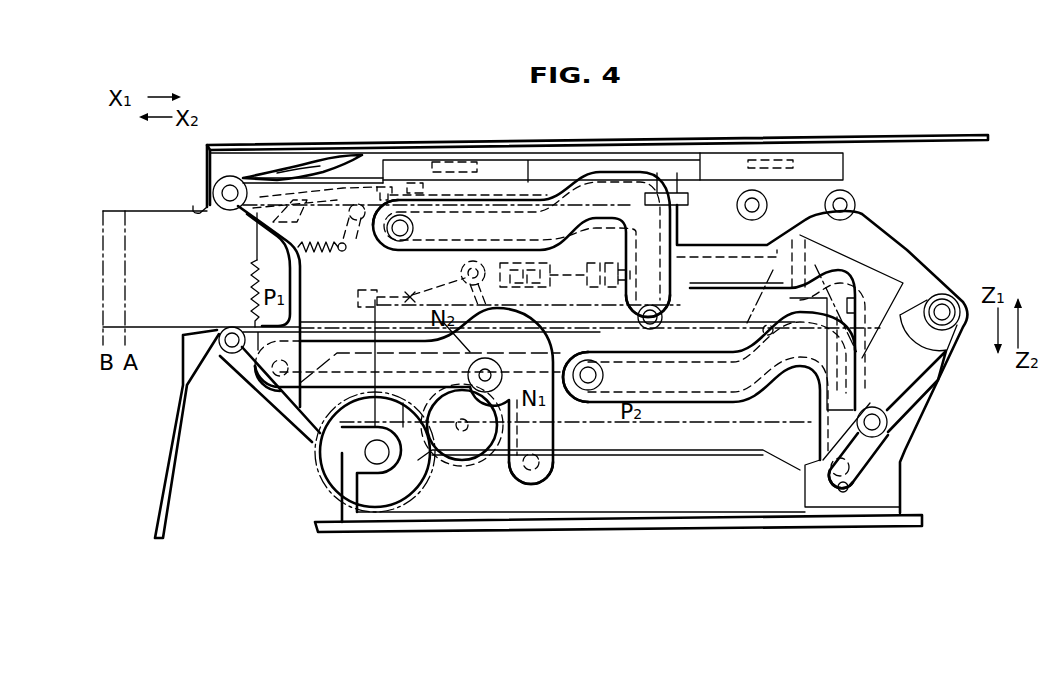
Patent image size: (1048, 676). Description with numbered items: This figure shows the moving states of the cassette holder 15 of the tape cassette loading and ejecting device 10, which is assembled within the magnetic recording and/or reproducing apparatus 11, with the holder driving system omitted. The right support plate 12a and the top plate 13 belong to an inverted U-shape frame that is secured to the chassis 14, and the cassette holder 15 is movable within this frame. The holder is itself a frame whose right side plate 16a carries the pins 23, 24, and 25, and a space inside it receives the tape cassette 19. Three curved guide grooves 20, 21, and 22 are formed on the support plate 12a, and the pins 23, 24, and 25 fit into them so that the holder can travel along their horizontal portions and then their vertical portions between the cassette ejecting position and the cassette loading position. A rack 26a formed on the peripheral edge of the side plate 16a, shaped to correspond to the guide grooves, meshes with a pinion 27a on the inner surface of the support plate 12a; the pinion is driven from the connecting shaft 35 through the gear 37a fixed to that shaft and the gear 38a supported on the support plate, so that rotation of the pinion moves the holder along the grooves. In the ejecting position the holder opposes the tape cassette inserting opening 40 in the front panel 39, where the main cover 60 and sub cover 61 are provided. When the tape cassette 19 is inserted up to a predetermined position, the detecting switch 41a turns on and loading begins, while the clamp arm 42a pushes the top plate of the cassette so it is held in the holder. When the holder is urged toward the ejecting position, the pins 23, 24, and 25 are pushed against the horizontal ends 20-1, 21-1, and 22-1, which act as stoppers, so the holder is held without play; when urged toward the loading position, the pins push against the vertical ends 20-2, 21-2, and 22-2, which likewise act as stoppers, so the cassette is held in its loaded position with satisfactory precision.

The tape cassette loading and ejecting device 10 is at (946, 109).
The magnetic recording and/or reproducing apparatus 11 is at (861, 143).
The right support plate 12a is at (897, 455).
The top plate 13 is at (447, 160).
The chassis 14 is at (637, 520).
The cassette holder 15 is at (250, 238).
The right side plate 16a is at (263, 258).
The tape cassette 19 is at (138, 211).
The curved guide groove 20 is at (604, 183).
The horizontal end of guide groove 20-1 is at (399, 243).
The vertical end of guide groove 20-2 is at (682, 322).
The curved guide groove 21 is at (404, 396).
The horizontal end of guide groove 21-1 is at (272, 395).
The vertical end of guide groove 21-2 is at (542, 478).
The curved guide groove 22 is at (725, 400).
The horizontal end of guide groove 22-1 is at (580, 346).
The vertical end of guide groove 22-2 is at (849, 489).
The pin 23 is at (414, 228).
The pin 24 is at (272, 380).
The pin 25 is at (604, 377).
The rack 26a is at (253, 284).
The pinion 27a is at (501, 468).
The connecting shaft 35 is at (368, 452).
The gear 37a is at (330, 484).
The gear 38a is at (459, 460).
The front panel 39 is at (168, 460).
The tape cassette inserting opening 40 is at (194, 207).
The detecting switch 41a is at (358, 298).
The clamp arm 42a is at (399, 187).
The main cover 60 is at (294, 163).
The sub cover 61 is at (250, 362).